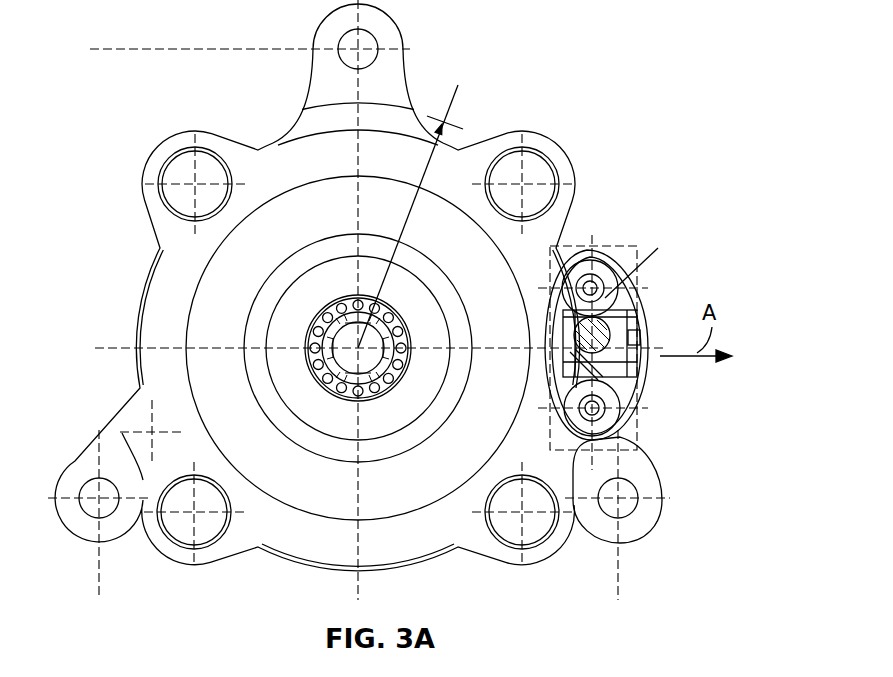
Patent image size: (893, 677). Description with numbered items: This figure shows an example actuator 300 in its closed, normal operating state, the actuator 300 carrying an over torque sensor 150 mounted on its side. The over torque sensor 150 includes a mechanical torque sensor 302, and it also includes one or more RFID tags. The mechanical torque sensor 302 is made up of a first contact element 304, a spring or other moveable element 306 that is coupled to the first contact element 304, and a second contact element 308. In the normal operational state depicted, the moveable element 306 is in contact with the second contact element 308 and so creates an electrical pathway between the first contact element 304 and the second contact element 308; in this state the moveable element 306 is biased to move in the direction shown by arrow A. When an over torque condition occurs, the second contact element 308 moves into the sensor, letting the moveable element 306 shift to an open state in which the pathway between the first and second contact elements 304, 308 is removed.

The actuator 300 is at (506, 72).
The over torque sensor 150 is at (605, 324).
The mechanical torque sensor 302 is at (662, 402).
The first contact element 304 is at (604, 428).
The moveable element 306 is at (637, 296).
The second contact element 308 is at (553, 330).